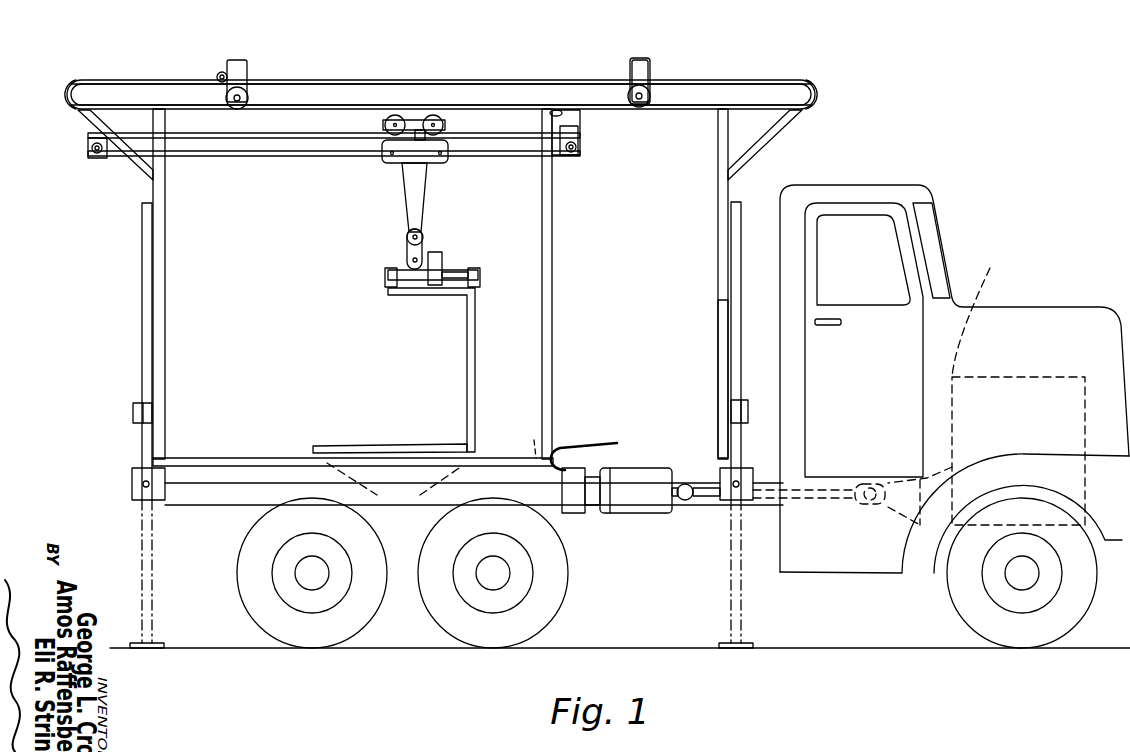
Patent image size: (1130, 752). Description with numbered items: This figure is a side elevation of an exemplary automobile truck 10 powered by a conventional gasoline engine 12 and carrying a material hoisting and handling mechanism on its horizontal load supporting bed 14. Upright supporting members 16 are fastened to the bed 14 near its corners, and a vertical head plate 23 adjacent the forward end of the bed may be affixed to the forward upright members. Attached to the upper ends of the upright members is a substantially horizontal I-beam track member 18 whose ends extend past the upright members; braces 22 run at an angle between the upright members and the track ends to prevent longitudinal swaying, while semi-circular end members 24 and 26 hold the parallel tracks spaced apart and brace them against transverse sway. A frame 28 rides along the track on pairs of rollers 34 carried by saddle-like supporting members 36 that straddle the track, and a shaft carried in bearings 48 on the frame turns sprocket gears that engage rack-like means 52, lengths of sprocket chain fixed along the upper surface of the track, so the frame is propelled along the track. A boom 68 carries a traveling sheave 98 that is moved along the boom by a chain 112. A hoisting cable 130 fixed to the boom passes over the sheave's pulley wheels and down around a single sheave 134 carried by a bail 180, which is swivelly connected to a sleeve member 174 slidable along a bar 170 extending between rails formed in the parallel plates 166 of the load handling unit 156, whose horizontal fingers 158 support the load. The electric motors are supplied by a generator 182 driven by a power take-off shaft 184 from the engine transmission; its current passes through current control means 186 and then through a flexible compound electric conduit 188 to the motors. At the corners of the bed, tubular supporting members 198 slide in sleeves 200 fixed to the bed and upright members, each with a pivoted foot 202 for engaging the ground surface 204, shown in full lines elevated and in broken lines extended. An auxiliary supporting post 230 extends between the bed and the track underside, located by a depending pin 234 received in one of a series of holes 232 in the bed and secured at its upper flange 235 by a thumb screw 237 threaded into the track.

The automobile truck 10 is at (1036, 302).
The engine 12 is at (919, 389).
The load supporting bed 14 is at (233, 460).
The upright supporting members 16 is at (166, 270).
The track member 18 is at (713, 92).
The braces 22 is at (132, 163).
The vertical head plate 23 is at (731, 370).
The end member 24 is at (812, 82).
The end member 26 is at (68, 85).
The frame 28 is at (651, 70).
The rollers 34 is at (250, 90).
The saddle-like supporting members 36 is at (238, 62).
The bearings 48 is at (220, 74).
The rack-like means 52 is at (168, 82).
The boom 68 is at (256, 127).
The traveling sheave 98 is at (445, 118).
The chain 112 is at (328, 148).
The hoisting cable 130 is at (270, 156).
The sheave 134 is at (408, 232).
The unit 156 is at (480, 383).
The fingers 158 is at (362, 447).
The plates 166 is at (480, 276).
The bar 170 is at (448, 275).
The sleeve member 174 is at (440, 255).
The bail 180 is at (406, 250).
The generator 182 is at (632, 514).
The power take-off shaft 184 is at (768, 496).
The current control means 186 is at (572, 514).
The compound electric conduit 188 is at (606, 443).
The supporting member 198 is at (142, 305).
The sleeve 200 is at (148, 443).
The foot 202 is at (132, 484).
The ground surface 204 is at (898, 647).
The auxiliary supporting post 230 is at (553, 272).
The holes 232 is at (394, 487).
The depending pin 234 is at (534, 444).
The flange 235 is at (555, 110).
The thumb screw 237 is at (575, 110).